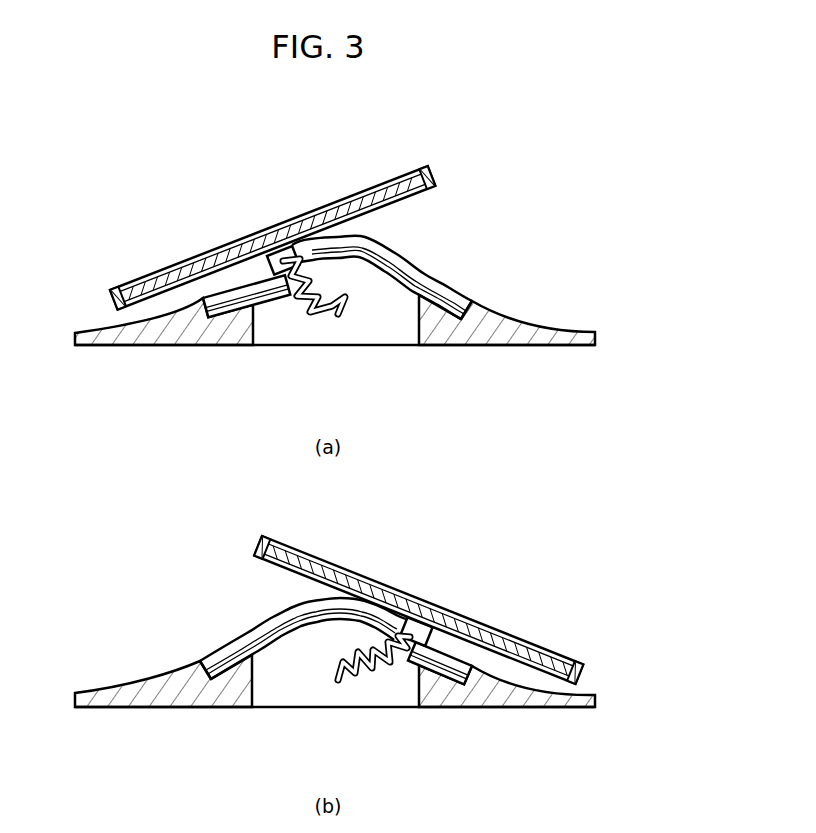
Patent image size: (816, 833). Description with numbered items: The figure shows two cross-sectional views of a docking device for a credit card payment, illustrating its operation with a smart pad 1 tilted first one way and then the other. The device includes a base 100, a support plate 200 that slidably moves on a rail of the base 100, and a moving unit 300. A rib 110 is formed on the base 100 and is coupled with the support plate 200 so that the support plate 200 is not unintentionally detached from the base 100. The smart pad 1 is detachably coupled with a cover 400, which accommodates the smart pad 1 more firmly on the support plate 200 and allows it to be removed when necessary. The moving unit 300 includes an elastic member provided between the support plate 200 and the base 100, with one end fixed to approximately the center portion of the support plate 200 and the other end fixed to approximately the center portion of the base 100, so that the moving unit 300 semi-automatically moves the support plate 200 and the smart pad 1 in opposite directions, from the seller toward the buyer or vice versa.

The smart pad 1 is at (188, 264).
The base 100 is at (553, 330).
The rib 110 is at (427, 288).
The support plate 200 is at (277, 257).
The moving unit 300 is at (323, 318).
The cover 400 is at (116, 290).